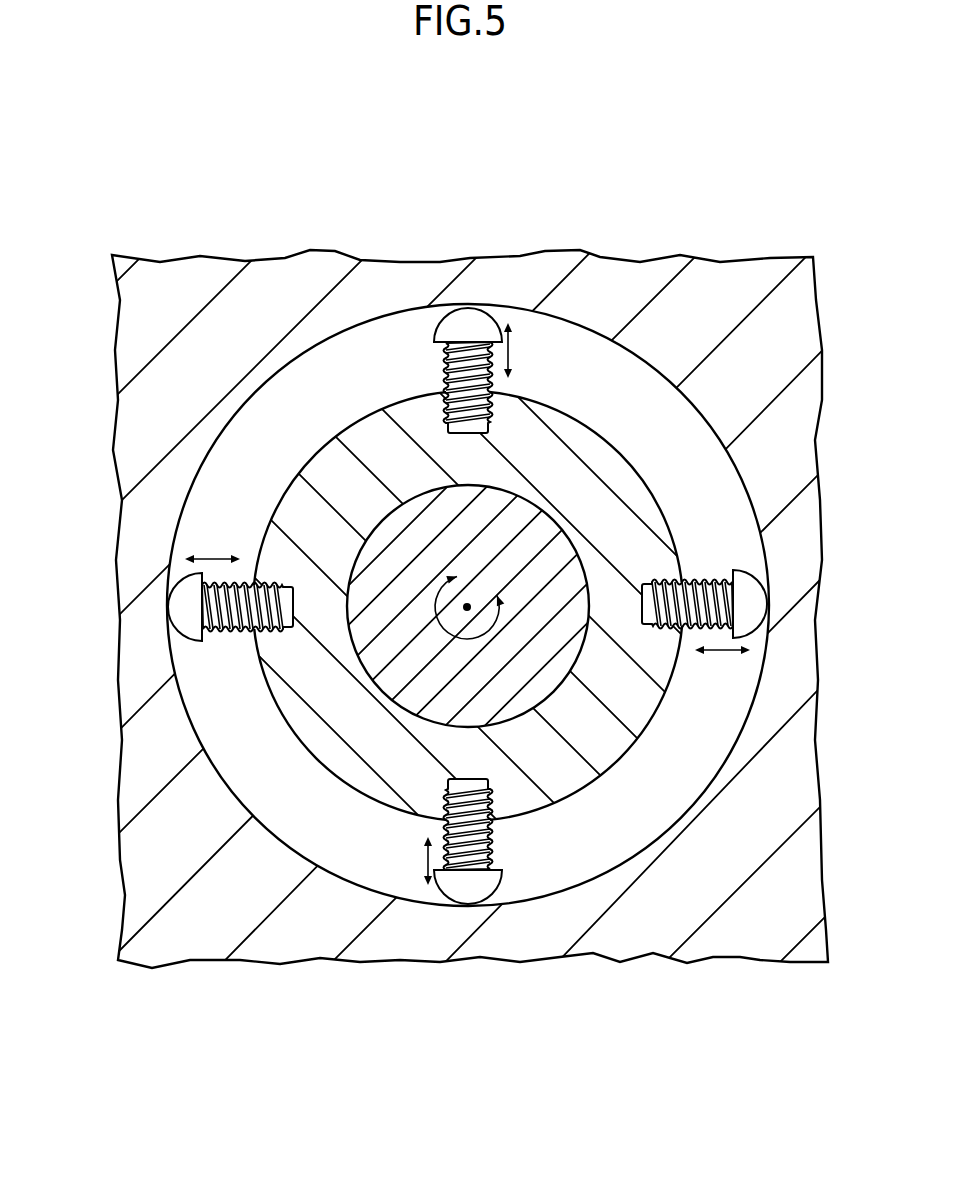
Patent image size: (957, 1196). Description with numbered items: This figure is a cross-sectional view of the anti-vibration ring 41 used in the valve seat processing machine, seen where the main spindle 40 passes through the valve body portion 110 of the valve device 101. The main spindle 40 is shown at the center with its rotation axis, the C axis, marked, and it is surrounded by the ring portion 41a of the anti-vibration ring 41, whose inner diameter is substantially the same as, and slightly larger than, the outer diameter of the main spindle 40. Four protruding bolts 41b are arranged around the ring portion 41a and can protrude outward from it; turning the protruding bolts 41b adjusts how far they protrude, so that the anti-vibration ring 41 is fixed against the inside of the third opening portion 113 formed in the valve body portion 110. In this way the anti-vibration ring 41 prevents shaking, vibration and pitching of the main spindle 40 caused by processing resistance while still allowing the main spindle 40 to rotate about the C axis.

The valve body portion 110 is at (742, 283).
The valve device 101 is at (478, 564).
The third opening portion 113 is at (731, 455).
The anti-vibration ring 41 is at (478, 608).
The ring portion 41a is at (336, 466).
The protruding bolts 41b is at (487, 325).
The main spindle 40 is at (555, 548).
The C axis C is at (469, 621).